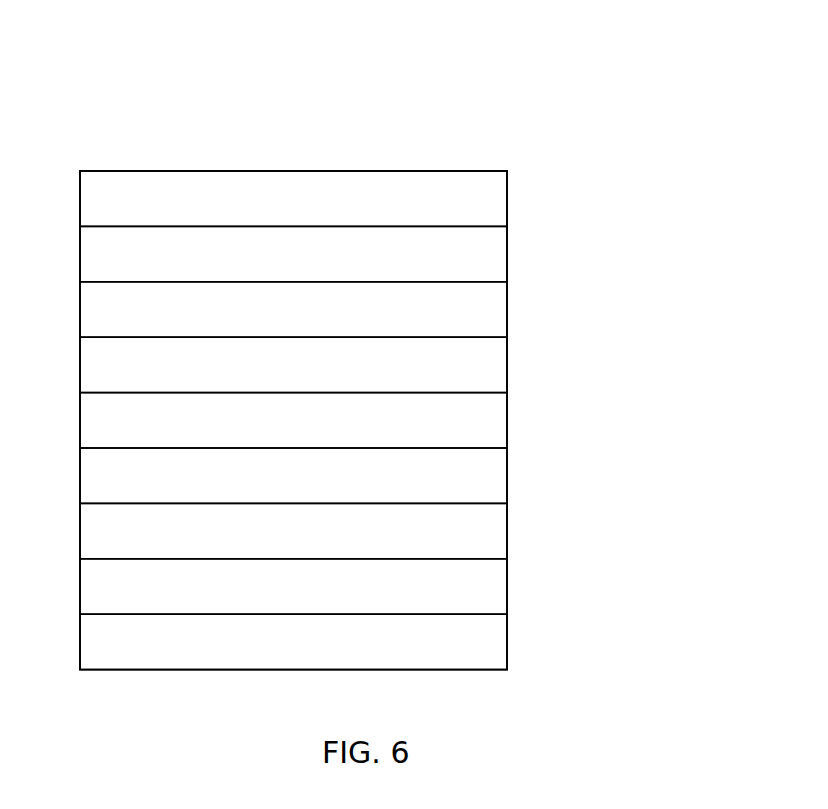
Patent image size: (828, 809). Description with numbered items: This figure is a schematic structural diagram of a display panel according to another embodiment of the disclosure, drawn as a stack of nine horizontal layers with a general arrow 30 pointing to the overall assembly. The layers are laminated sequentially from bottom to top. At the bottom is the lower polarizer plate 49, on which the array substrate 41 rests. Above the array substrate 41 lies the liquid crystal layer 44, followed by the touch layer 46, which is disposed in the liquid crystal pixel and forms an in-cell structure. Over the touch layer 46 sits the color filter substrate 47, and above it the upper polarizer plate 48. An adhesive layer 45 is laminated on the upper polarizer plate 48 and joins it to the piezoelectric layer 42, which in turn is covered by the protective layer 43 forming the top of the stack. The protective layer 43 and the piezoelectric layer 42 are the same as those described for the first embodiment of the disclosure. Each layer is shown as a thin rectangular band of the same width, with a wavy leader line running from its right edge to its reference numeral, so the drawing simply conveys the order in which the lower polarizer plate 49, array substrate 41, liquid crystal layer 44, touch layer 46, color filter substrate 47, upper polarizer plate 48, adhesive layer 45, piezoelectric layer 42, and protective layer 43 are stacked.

The light emitting device stack 30 is at (160, 138).
The protective layer 43 is at (485, 203).
The piezoelectric layer 42 is at (485, 258).
The adhesive layer 45 is at (485, 314).
The upper polarizer plate 48 is at (485, 369).
The color filter substrate 47 is at (485, 425).
The touch layer 46 is at (485, 480).
The liquid crystal layer 44 is at (485, 535).
The array substrate 41 is at (485, 591).
The lower polarizer plate 49 is at (485, 646).